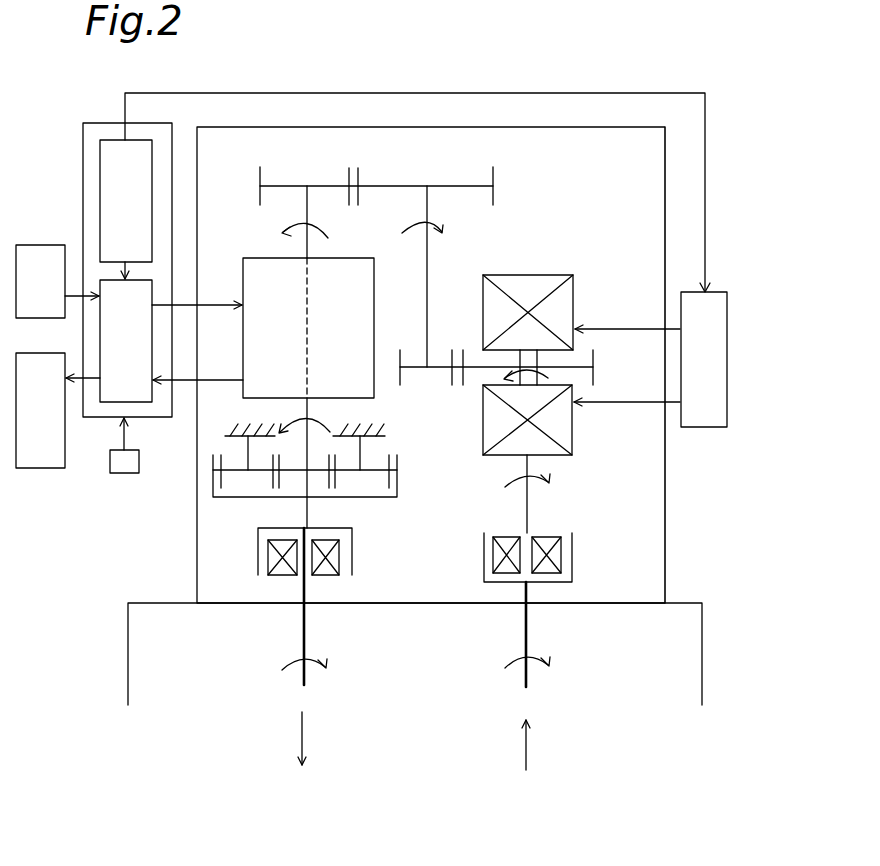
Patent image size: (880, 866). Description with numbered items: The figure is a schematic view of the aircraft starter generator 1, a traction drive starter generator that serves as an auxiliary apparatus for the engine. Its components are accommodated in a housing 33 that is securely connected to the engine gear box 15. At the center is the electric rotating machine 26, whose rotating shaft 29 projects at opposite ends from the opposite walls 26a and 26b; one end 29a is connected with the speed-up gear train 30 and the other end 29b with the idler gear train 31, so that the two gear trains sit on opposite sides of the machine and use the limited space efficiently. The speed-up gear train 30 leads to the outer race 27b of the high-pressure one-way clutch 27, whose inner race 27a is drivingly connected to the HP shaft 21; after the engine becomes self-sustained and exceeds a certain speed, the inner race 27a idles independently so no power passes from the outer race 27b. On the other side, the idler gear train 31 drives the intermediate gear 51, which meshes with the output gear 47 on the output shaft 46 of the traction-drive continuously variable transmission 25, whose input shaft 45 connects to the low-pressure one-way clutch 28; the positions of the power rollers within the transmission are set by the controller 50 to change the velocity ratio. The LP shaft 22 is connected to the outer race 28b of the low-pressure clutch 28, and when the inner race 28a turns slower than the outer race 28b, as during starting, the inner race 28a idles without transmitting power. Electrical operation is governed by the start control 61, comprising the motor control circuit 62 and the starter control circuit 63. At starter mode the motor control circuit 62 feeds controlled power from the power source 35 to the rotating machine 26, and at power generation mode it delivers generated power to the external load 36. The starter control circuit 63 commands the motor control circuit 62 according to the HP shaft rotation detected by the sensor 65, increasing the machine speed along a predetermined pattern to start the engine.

The starter generator 1 is at (666, 181).
The gear box 15 is at (702, 620).
The high-pressure shaft 21 is at (302, 612).
The low-pressure shaft 22 is at (526, 618).
The traction-drive continuously variable transmission 25 is at (569, 365).
The electric rotating machine 26 is at (374, 320).
The wall of the rotating machine 26a is at (368, 256).
The wall of the rotating machine 26b is at (343, 398).
The high-pressure one-way clutch 27 is at (315, 562).
The inner race of the high-pressure clutch 27a is at (310, 582).
The outer race of the high-pressure clutch 27b is at (352, 552).
The low-pressure one-way clutch 28 is at (562, 556).
The inner race of the low-pressure clutch 28a is at (528, 530).
The outer race of the low-pressure clutch 28b is at (560, 582).
The rotating shaft 29 is at (305, 282).
The one end of the rotating shaft 29a is at (302, 405).
The other end of the rotating shaft 29b is at (310, 215).
The speed-up gear train 30 is at (397, 470).
The idler gear train 31 is at (465, 185).
The housing 33 is at (666, 250).
The power source 35 is at (37, 245).
The external load 36 is at (37, 468).
The input shaft 45 is at (530, 462).
The output shaft 46 is at (537, 360).
The output gear 47 is at (595, 375).
The controller 50 is at (703, 427).
The intermediate gear 51 is at (413, 370).
The start control 61 is at (83, 145).
The motor control circuit 62 is at (152, 344).
The starter control circuit 63 is at (152, 165).
The sensor 65 is at (125, 473).